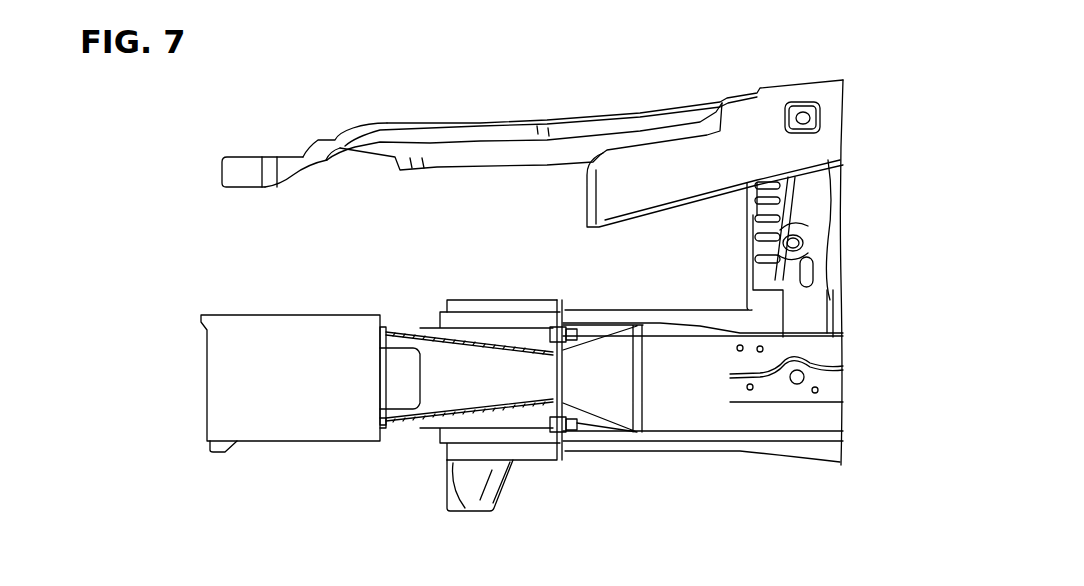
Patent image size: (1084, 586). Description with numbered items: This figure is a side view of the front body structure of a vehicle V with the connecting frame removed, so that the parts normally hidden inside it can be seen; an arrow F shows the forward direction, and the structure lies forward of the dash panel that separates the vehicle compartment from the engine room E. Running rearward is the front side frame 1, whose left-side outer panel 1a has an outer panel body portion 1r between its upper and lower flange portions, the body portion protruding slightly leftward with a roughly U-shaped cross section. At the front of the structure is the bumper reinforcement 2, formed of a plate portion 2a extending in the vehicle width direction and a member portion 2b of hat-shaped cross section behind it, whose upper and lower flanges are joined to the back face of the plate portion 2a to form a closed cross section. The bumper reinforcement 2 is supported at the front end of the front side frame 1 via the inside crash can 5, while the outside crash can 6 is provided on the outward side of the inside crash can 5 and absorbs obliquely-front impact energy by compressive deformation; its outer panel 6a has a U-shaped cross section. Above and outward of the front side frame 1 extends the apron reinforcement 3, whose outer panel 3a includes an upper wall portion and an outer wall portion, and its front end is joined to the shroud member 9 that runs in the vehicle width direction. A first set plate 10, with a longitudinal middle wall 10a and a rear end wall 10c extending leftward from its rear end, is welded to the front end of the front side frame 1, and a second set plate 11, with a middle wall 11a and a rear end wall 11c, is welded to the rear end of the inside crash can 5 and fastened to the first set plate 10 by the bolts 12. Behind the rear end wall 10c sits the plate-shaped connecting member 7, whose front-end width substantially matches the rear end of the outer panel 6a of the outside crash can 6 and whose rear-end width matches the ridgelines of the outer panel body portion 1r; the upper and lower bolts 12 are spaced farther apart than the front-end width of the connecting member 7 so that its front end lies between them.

The front side frame 1 is at (760, 473).
The outer panel 1a is at (728, 454).
The outer panel body portion 1r is at (671, 355).
The bumper reinforcement 2 is at (242, 314).
The plate portion 2a is at (258, 432).
The member portion 2b is at (394, 425).
The apron reinforcement 3 is at (818, 178).
The outer panel 3a is at (823, 138).
The inside crash can 5 is at (398, 325).
The outside crash can 6 is at (426, 422).
The outer panel 6a is at (432, 358).
The connecting member 7 is at (605, 350).
The shroud member 9 is at (239, 157).
The first set plate 10 is at (567, 450).
The middle wall 10a is at (465, 307).
The rear end wall 10c is at (582, 422).
The second set plate 11 is at (527, 454).
The middle wall 11a is at (507, 320).
The rear end wall 11c is at (547, 315).
The fastening bolt 12 is at (571, 333).
The vehicle V is at (620, 86).
The engine room E is at (424, 240).
The arrow F is at (235, 557).